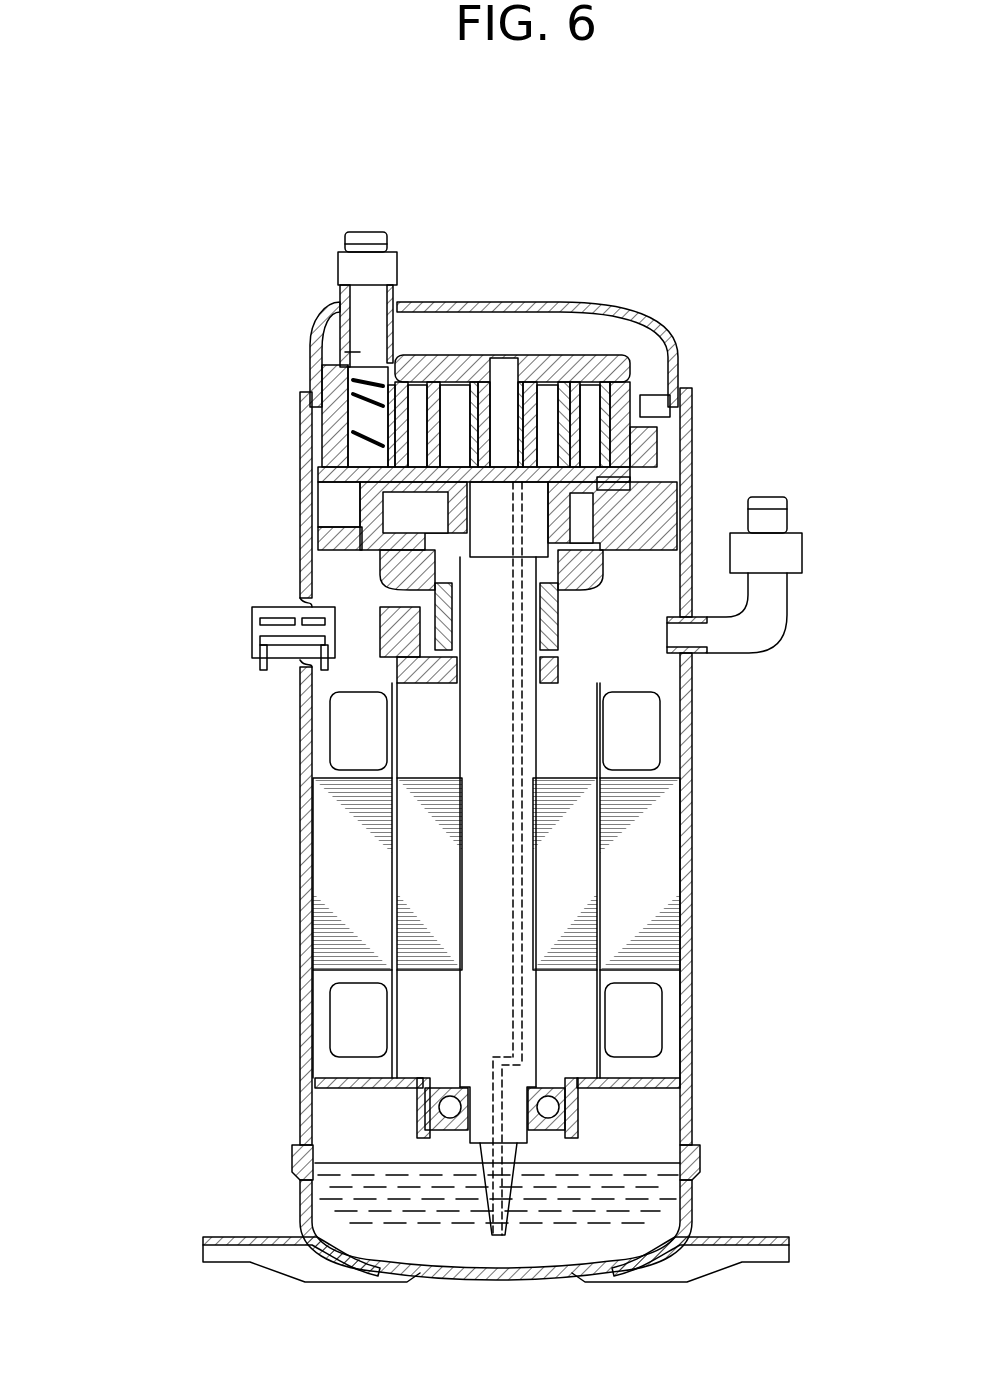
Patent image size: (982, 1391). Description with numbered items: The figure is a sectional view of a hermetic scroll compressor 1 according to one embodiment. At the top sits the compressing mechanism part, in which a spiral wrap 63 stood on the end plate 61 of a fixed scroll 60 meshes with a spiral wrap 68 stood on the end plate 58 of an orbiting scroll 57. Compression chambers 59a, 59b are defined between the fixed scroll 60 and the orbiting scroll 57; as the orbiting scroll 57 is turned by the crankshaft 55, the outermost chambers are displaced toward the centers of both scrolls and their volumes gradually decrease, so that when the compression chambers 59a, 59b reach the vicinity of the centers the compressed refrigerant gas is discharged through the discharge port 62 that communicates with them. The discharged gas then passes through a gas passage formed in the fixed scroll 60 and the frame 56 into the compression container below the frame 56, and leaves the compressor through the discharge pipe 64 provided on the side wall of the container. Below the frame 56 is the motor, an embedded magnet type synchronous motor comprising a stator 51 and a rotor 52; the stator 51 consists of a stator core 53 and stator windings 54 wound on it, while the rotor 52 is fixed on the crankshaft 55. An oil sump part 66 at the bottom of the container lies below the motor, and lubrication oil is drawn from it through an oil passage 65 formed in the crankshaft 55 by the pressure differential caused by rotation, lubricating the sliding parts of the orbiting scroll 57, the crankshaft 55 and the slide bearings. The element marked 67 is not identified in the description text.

The compressor 1 is at (738, 846).
The stator 51 is at (333, 928).
The rotor 52 is at (423, 775).
The stator core 53 is at (333, 850).
The stator windings 54 is at (355, 720).
The crankshaft 55 is at (473, 732).
The frame 56 is at (360, 555).
The orbiting scroll 57 is at (312, 493).
The end plate 58 is at (312, 470).
The compression chamber 59a is at (585, 415).
The compression chamber 59b is at (300, 420).
The fixed scroll 60 is at (643, 318).
The end plate 61 is at (587, 413).
The discharge port 62 is at (503, 365).
The spiral wrap 63 is at (450, 400).
The discharge pipe 64 is at (775, 602).
The oil passage 65 is at (517, 1047).
The oil sump part 66 is at (607, 1170).
The eccentric crank 67 is at (540, 603).
The spiral wrap 68 is at (617, 430).